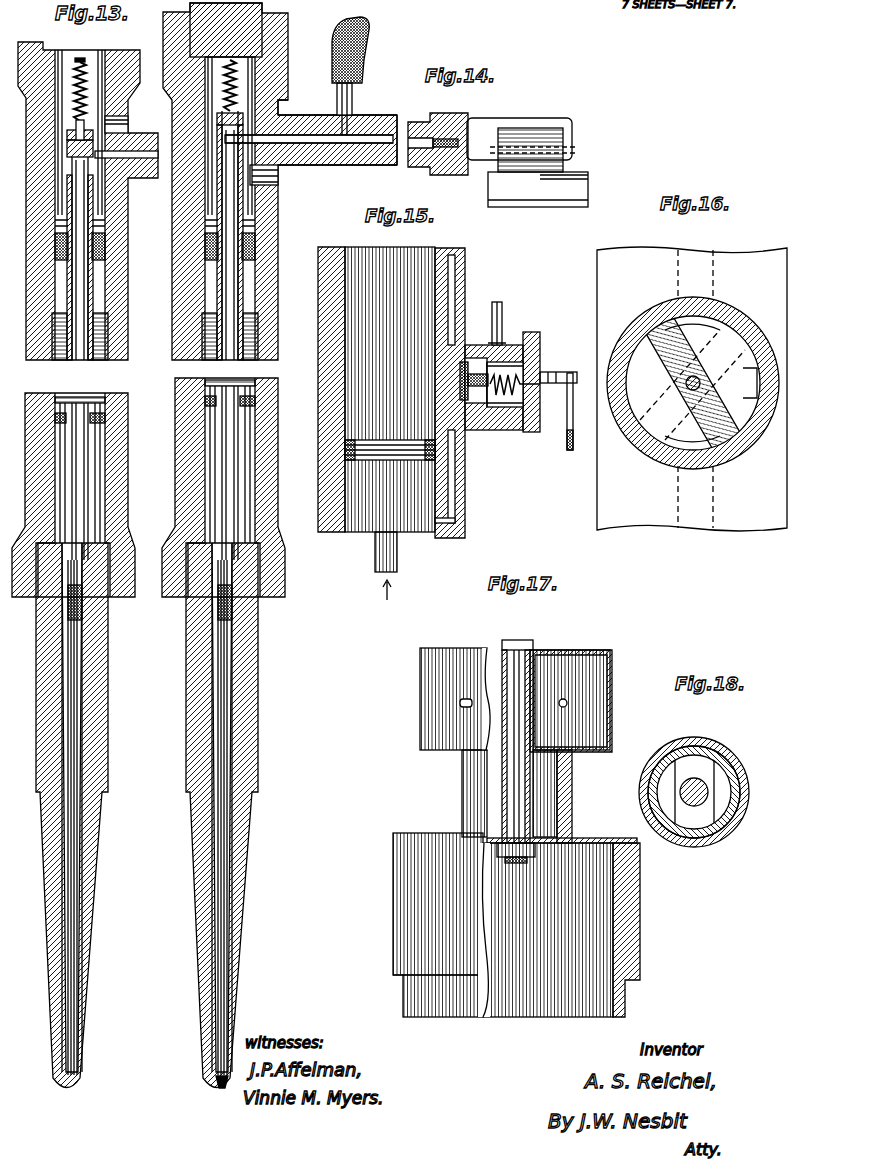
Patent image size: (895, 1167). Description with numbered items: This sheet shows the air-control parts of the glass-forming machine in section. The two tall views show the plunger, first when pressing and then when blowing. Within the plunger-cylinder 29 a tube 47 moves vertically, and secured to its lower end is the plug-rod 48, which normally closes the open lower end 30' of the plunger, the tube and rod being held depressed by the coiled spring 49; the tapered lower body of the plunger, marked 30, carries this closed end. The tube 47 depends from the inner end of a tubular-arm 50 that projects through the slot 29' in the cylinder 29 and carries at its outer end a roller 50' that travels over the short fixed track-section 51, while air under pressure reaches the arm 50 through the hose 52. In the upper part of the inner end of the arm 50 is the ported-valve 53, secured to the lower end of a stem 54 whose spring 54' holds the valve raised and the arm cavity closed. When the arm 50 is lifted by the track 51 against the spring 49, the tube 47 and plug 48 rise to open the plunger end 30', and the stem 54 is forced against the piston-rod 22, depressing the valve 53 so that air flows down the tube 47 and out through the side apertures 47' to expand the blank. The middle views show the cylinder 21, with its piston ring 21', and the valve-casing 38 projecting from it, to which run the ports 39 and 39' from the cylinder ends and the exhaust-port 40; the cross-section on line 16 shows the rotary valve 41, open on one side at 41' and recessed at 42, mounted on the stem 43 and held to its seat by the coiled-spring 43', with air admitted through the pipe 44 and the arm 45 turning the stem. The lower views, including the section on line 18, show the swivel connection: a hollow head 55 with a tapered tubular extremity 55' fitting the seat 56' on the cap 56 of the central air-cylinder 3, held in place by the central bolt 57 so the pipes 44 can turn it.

In FIG. 17, the central air-cylinder 3 is at (545, 930).
In FIG. 15, the section line 16— 16 is at (475, 345).
In FIG. 17, the section line 18— 18 is at (480, 792).
In FIG. 15, the cylinder 21 is at (390, 389).
In FIG. 16, the cylinder 21 is at (665, 501).
In FIG. 15, the piston ring 21' is at (390, 439).
In FIG. 13, the piston-rod 22 is at (262, 26).
In FIG. 15, the piston-rod 22 is at (375, 554).
In FIG. 13, the plunger-cylinder 29 is at (204, 300).
In FIG. 13, the slot 29' is at (279, 180).
In FIG. 13, the tapered shank 30 is at (148, 815).
In FIG. 13, the open lower end of the plunger 30' is at (211, 1102).
In FIG. 15, the valve-casing 38 is at (518, 345).
In FIG. 15, the port 39 is at (408, 391).
In FIG. 16, the port 39 is at (682, 265).
In FIG. 15, the port 39' is at (467, 476).
In FIG. 16, the port 39' is at (686, 515).
In FIG. 15, the exhaust-port 40 is at (460, 378).
In FIG. 16, the exhaust-port 40 is at (745, 432).
In FIG. 16, the rotary valve 41 is at (692, 376).
In FIG. 15, the open side of the valve 41' is at (492, 413).
In FIG. 16, the open side of the valve 41' is at (648, 387).
In FIG. 16, the recess 42 is at (745, 322).
In FIG. 15, the stem 43 is at (569, 365).
In FIG. 15, the coiled-spring 43' is at (545, 381).
In FIG. 15, the pipe 44 is at (498, 302).
In FIG. 17, the pipe 44 is at (462, 705).
In FIG. 15, the arm 45 is at (570, 450).
In FIG. 13, the tube 47 is at (155, 205).
In FIG. 13, the side apertures 47' is at (180, 730).
In FIG. 13, the plug-rod 48 is at (73, 841).
In FIG. 13, the coiled spring 49 is at (93, 362).
In FIG. 13, the tubular-arm 50 is at (311, 137).
In FIG. 14, the roller 50' is at (511, 144).
In FIG. 14, the track-section 51 is at (498, 198).
In FIG. 13, the hose 52 is at (363, 48).
In FIG. 13, the ported-valve 53 is at (279, 105).
In FIG. 13, the stem 54 is at (150, 88).
In FIG. 13, the spring 54' is at (155, 119).
In FIG. 17, the hollow head 55 is at (435, 699).
In FIG. 17, the tapered tubular extremity 55' is at (590, 717).
In FIG. 17, the cap 56 is at (414, 925).
In FIG. 17, the seat 56' is at (568, 908).
In FIG. 17, the central bolt 57 is at (521, 656).
In FIG. 18, the central bolt 57 is at (700, 822).